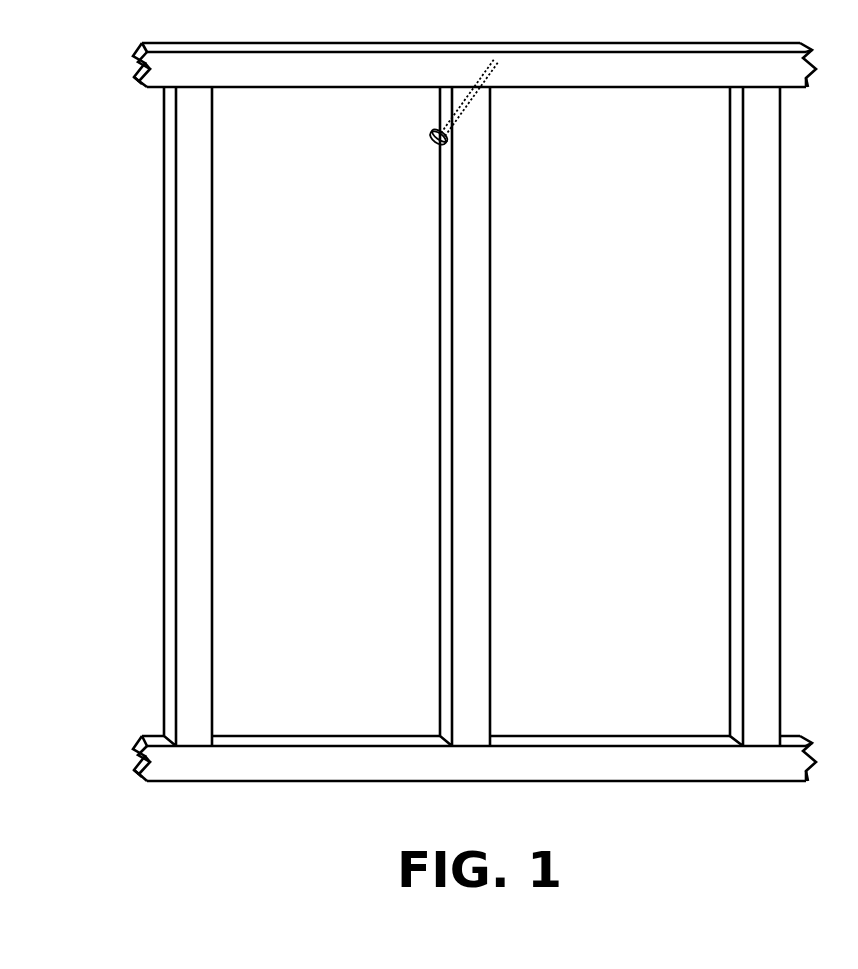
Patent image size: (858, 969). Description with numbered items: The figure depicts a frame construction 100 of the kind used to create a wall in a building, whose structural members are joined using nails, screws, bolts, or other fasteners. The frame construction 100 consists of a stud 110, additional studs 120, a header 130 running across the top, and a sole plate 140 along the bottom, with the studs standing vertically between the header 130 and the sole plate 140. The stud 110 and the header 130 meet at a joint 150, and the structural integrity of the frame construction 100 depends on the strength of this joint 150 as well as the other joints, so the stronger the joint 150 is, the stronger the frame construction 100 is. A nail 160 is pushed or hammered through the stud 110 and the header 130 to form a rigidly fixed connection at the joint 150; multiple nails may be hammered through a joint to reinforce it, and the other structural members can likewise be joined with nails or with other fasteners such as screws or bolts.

The frame construction 100 is at (66, 218).
The stud 110 is at (460, 340).
The additional studs 120 is at (190, 410).
The header 130 is at (635, 72).
The sole plate 140 is at (695, 758).
The joint 150 is at (495, 97).
The nail 160 is at (432, 145).